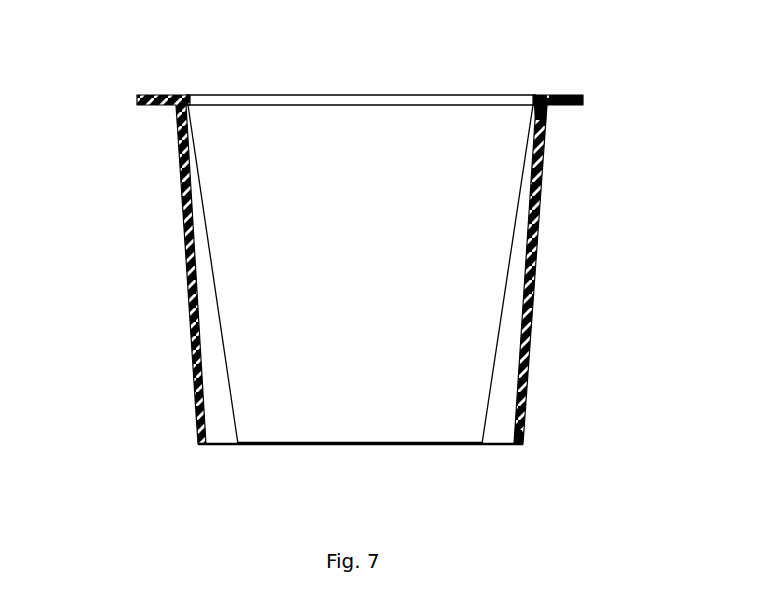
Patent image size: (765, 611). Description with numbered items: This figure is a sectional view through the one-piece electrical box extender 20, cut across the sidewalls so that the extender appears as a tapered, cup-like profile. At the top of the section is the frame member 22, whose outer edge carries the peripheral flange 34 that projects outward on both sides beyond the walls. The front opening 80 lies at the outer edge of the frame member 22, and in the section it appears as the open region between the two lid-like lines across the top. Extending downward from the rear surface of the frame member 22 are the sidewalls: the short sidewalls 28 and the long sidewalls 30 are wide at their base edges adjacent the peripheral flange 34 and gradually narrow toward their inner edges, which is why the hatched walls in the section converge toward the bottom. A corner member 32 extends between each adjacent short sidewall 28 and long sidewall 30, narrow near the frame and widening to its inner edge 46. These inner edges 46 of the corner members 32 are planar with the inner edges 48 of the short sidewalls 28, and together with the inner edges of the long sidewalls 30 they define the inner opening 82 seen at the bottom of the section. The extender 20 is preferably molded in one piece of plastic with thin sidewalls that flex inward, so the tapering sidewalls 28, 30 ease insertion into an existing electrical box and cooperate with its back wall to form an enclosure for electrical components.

The box extender 20 is at (130, 292).
The frame member 22 is at (541, 93).
The short sidewalls 28 is at (360, 274).
The long sidewalls 30 is at (537, 234).
The corner member 32 is at (222, 436).
The peripheral flange 34 is at (585, 100).
The inner edges of corner members 46 is at (498, 446).
The inner edges of short sidewalls 48 is at (432, 446).
The front opening 80 is at (357, 118).
The inner opening 82 is at (327, 433).